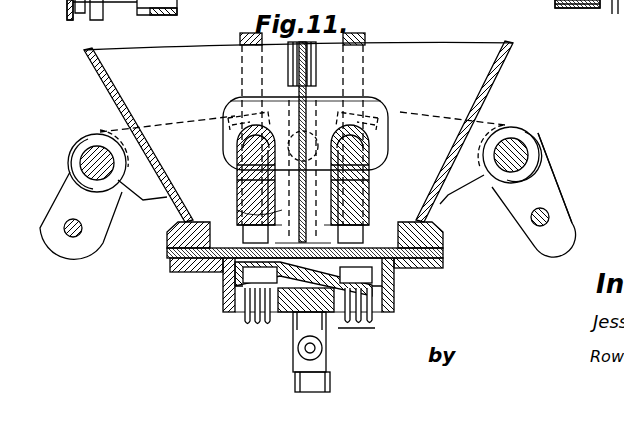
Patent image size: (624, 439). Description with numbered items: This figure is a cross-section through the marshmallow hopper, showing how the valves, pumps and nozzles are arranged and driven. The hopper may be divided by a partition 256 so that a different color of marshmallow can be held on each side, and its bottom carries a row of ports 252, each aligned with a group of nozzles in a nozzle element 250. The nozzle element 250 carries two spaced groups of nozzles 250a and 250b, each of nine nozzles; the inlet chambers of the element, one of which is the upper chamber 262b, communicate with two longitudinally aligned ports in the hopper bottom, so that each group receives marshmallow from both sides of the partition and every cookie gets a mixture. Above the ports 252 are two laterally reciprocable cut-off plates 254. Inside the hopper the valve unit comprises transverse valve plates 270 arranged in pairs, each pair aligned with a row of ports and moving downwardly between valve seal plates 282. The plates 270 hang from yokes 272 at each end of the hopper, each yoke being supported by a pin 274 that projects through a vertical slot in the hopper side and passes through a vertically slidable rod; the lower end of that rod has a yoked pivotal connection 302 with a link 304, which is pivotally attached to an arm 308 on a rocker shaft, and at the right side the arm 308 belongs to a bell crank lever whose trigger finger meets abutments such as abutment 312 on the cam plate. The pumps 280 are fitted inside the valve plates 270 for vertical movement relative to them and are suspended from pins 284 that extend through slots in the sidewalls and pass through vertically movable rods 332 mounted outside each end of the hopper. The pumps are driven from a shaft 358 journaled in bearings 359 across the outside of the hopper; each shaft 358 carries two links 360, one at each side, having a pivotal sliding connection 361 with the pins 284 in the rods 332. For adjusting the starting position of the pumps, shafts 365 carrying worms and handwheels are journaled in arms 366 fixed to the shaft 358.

The nozzle element 250 is at (394, 306).
The group of nozzles 250a is at (365, 328).
The group of nozzles 250b is at (270, 330).
The port 252 is at (307, 275).
The cut-off plate 254 is at (223, 290).
The partition 256 is at (268, 97).
The upper chamber 262b is at (245, 298).
The valve plate 270 is at (243, 234).
The yoke 272 is at (381, 99).
The pin 274 is at (312, 142).
The pump 280 is at (237, 170).
The valve seal plate 282 is at (172, 259).
The pin 284 is at (237, 140).
The yoked pivotal connection 302 is at (322, 349).
The link 304 is at (330, 382).
The arm 308 is at (576, 15).
The abutment 312 is at (614, 15).
The rod 332 is at (240, 38).
The shaft 358 is at (95, 148).
The bearing 359 is at (100, 128).
The link 360 is at (188, 122).
The pivotal sliding connection 361 is at (233, 122).
The shaft 365 is at (549, 217).
The arm 366 is at (553, 178).